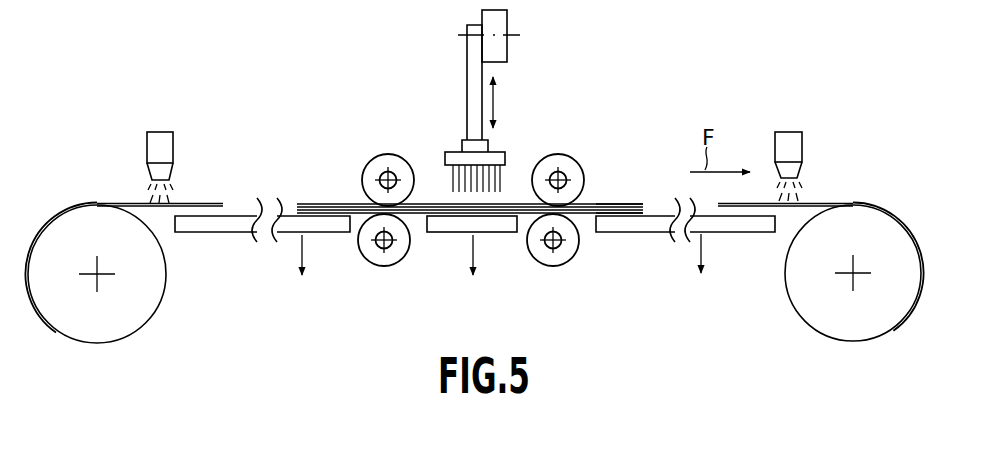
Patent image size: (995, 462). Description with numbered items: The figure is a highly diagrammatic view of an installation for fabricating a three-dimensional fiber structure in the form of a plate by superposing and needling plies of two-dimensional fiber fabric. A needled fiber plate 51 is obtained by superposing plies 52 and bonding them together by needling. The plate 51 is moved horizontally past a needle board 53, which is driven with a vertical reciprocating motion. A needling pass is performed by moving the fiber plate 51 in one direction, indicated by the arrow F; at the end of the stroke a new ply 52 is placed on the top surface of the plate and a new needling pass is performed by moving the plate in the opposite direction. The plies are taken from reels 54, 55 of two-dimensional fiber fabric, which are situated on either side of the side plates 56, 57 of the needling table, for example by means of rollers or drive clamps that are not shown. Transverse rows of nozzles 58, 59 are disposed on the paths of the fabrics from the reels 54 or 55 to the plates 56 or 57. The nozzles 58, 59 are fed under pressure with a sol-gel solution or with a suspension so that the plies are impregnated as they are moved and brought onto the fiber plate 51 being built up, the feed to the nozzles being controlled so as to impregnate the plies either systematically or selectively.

The needled fiber plate 51 is at (630, 199).
The plies 52 is at (637, 207).
The needle board 53 is at (455, 155).
The reel 54 is at (160, 291).
The reel 55 is at (793, 293).
The side plate 56 is at (228, 233).
The side plate 57 is at (740, 232).
The nozzles 58 is at (163, 138).
The nozzles 59 is at (794, 137).